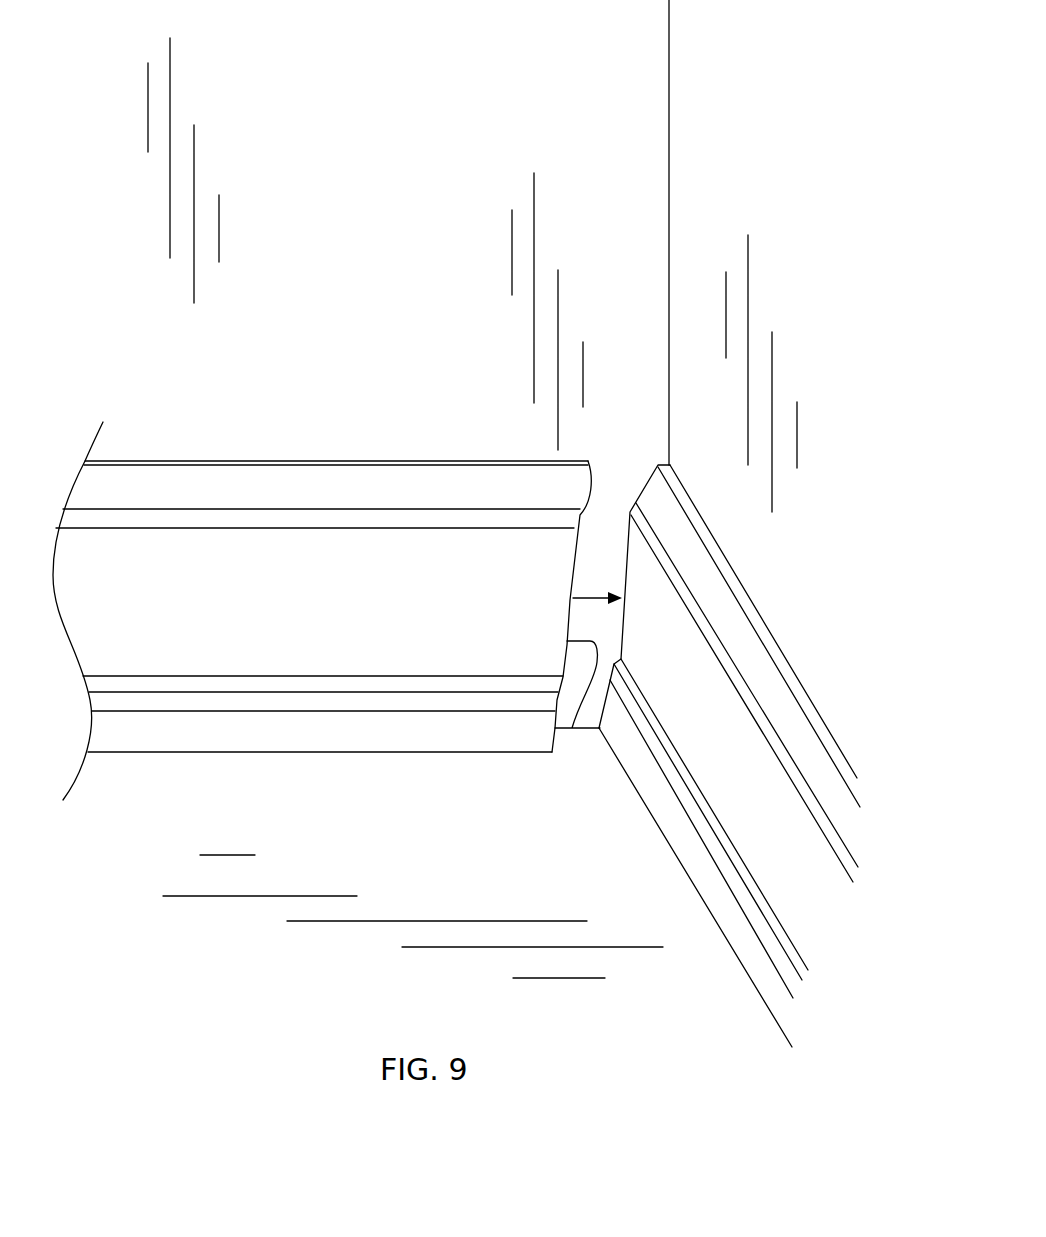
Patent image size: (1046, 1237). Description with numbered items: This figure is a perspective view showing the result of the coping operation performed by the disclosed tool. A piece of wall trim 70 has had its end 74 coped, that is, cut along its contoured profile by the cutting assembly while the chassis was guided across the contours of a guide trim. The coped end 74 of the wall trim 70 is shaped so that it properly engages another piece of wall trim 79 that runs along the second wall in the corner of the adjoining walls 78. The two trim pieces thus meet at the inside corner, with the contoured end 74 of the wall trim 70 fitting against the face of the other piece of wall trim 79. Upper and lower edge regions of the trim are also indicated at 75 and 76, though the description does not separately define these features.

The wall trim 70 is at (322, 606).
The end of wall trim 74 is at (572, 730).
The top edge of molding 75 is at (412, 461).
The bottom edge of molding 76 is at (400, 752).
The adjoining walls 78 is at (653, 524).
The another piece of wall trim 79 is at (763, 860).